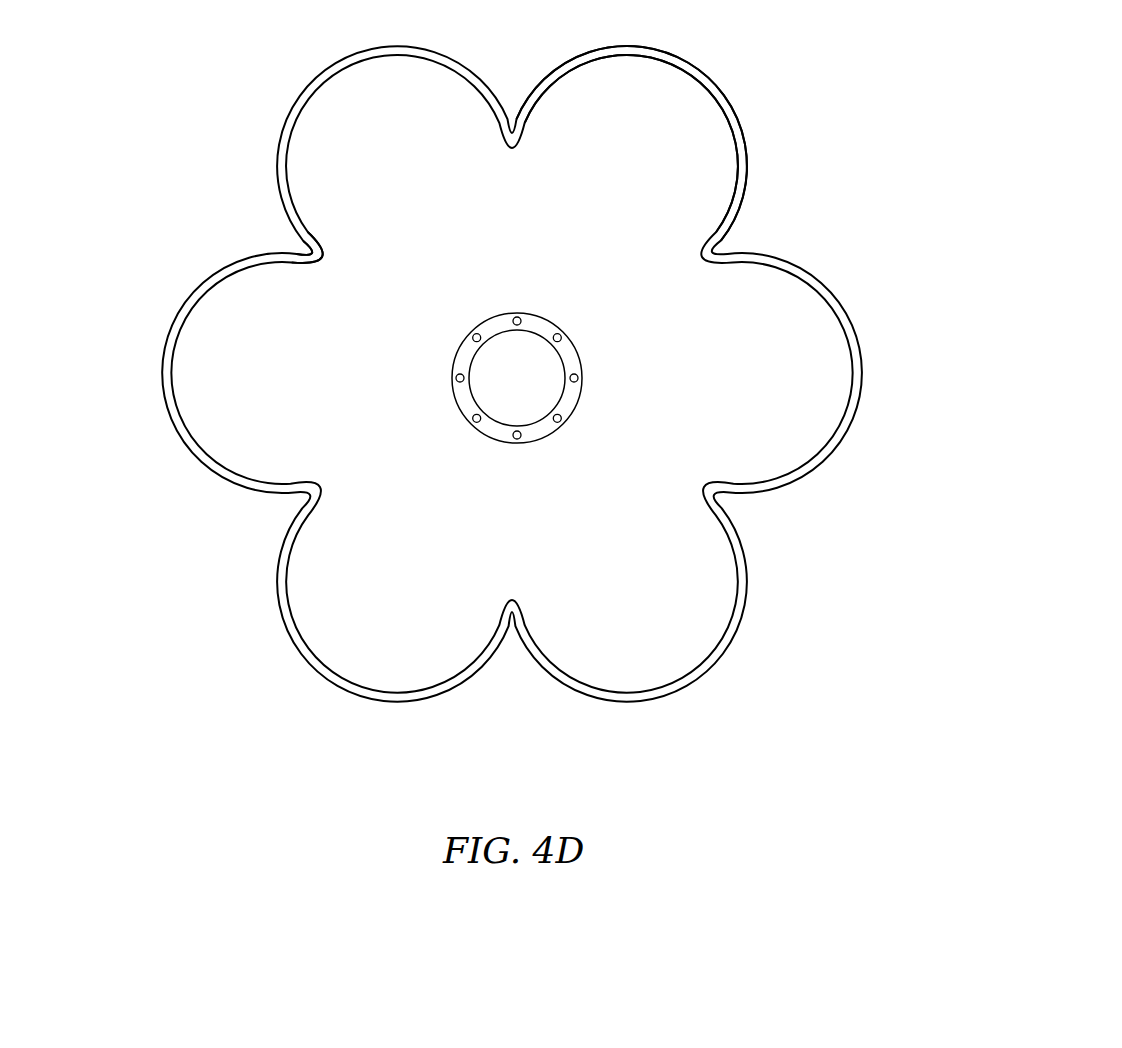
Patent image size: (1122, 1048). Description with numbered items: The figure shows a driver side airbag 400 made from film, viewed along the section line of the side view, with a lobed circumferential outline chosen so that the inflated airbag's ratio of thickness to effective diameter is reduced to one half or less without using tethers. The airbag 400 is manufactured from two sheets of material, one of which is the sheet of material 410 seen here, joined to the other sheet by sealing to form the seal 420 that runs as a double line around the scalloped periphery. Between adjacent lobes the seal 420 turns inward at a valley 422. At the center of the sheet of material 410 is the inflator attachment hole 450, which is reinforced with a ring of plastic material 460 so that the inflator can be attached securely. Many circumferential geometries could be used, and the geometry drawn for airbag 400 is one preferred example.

The airbag 400 is at (740, 655).
The sheet of material 410 is at (725, 327).
The seal 420 is at (748, 155).
The valley between lobes 422 is at (307, 250).
The inflator attachment hole 450 is at (517, 373).
The ring of plastic material 460 is at (567, 402).